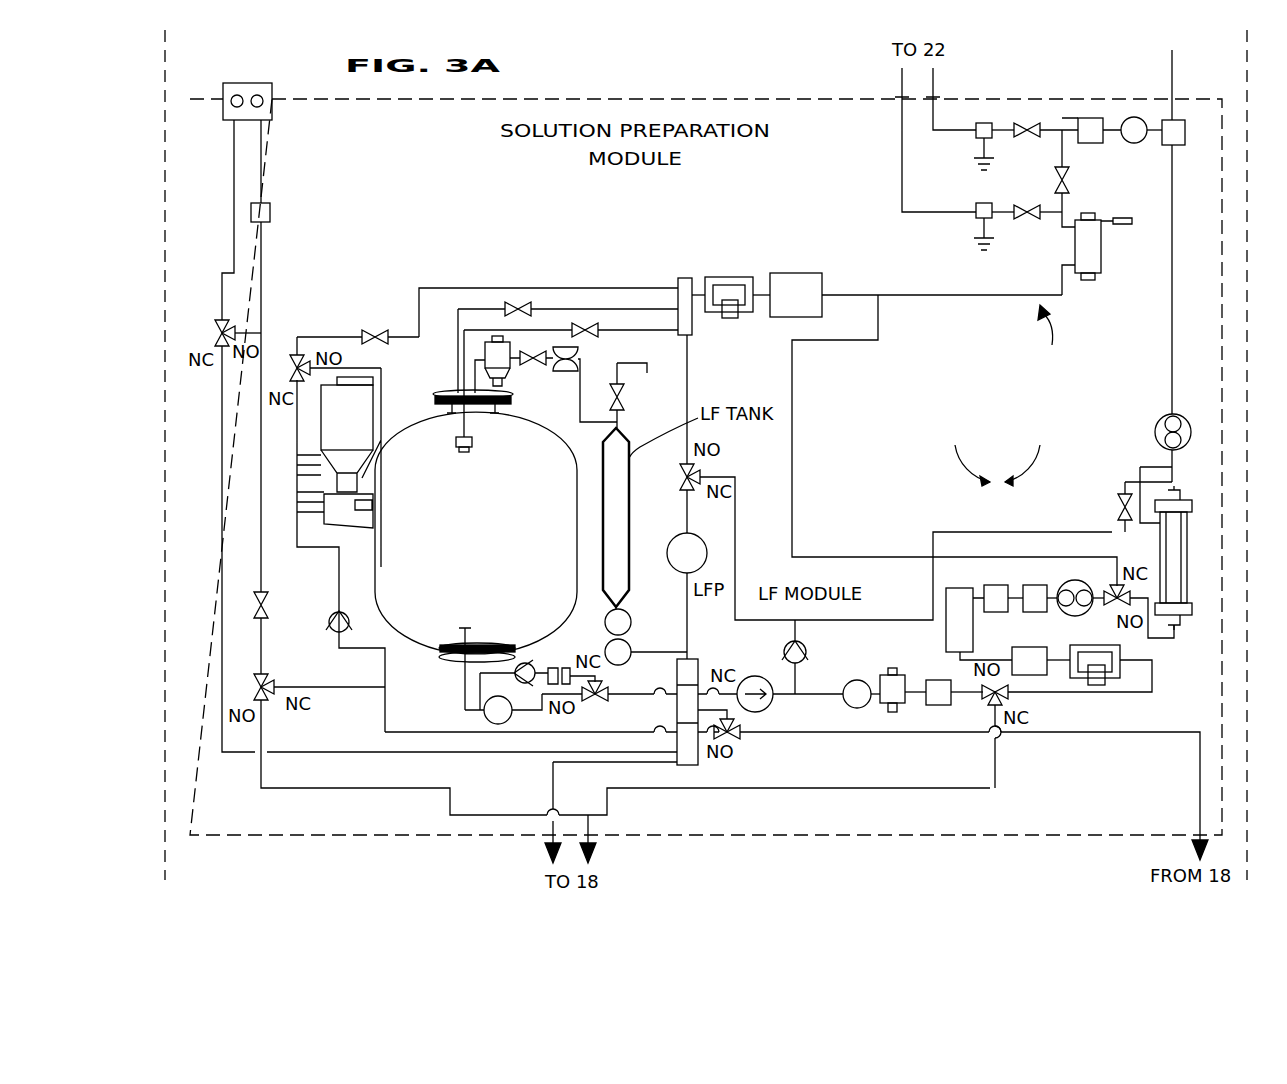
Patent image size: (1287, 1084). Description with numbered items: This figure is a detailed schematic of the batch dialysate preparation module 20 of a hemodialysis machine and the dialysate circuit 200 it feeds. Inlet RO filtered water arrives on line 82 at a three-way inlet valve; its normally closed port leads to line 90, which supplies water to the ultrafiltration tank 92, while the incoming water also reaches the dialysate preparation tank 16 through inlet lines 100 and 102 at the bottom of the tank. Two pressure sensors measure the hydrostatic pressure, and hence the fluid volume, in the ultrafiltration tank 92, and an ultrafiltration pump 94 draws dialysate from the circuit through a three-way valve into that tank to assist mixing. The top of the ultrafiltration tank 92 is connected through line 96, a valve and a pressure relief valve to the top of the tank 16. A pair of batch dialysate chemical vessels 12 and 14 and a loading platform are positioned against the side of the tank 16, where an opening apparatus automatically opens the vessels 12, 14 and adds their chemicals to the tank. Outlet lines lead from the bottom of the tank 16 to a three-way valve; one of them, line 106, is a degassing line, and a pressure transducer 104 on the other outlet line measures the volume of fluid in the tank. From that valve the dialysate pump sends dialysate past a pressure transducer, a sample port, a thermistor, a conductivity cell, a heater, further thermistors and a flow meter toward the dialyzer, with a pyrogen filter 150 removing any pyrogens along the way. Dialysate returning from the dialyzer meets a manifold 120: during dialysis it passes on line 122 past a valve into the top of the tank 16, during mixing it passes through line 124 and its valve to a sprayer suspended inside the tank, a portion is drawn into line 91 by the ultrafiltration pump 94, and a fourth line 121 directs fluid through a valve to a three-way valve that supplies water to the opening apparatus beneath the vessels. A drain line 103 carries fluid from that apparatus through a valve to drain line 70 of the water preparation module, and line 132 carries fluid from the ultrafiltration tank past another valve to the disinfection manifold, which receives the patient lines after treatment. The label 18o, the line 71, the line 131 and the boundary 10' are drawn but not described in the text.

The batch dialysate chemicals vessel 12 is at (358, 438).
The batch dialysate chemicals vessel 14 is at (381, 388).
The dialysate preparation tank 16 is at (486, 605).
The outlet connector 18o is at (289, 240).
The dialysate preparation module 20 is at (250, 840).
The drain line 70 is at (588, 832).
The outlet line 71 is at (553, 805).
The inlet RO water line 82 is at (1200, 808).
The water supply line 90 is at (687, 645).
The ultrafiltration line 91 is at (687, 368).
The ultrafiltration tank 92 is at (629, 560).
The ultrafiltration pump 94 is at (672, 535).
The line 96 is at (580, 422).
The inlet line 100 is at (618, 782).
The inlet line 102 is at (465, 712).
The drain line 103 is at (339, 588).
The pressure transducer 104 is at (493, 725).
The degassing line 106 is at (553, 740).
The manifold 120 is at (685, 278).
The fourth line 121 is at (458, 300).
The line 122 is at (458, 288).
The line 124 is at (605, 330).
The line 131 is at (258, 330).
The line 132 is at (222, 560).
The pyrogen filter 150 is at (1210, 556).
The dialysate circuit 200 is at (1073, 328).
The LF module boundary 10' is at (874, 546).